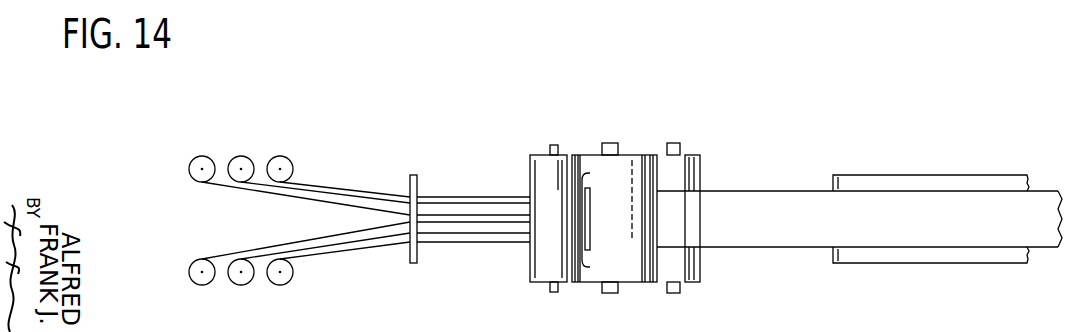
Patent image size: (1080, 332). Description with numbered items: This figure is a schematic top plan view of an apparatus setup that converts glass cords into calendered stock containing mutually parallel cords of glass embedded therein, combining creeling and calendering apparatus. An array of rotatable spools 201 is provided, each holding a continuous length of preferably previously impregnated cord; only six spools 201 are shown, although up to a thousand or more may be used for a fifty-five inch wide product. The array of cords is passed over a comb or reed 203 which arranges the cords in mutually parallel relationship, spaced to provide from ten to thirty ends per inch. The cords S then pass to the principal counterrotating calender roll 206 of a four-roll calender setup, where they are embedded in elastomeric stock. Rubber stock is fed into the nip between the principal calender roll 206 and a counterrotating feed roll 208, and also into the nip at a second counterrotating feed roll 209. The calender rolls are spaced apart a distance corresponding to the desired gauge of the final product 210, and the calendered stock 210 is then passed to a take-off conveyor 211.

The rotatable spools 201 is at (246, 166).
The comb or reed 203 is at (413, 175).
The counterrotating feed roll 208 is at (547, 170).
The cords S is at (587, 198).
The principal calender roll 206 is at (618, 162).
The counterrotating feed roll 209 is at (682, 275).
The calendered stock 210 is at (758, 217).
The take-off conveyor 211 is at (858, 255).